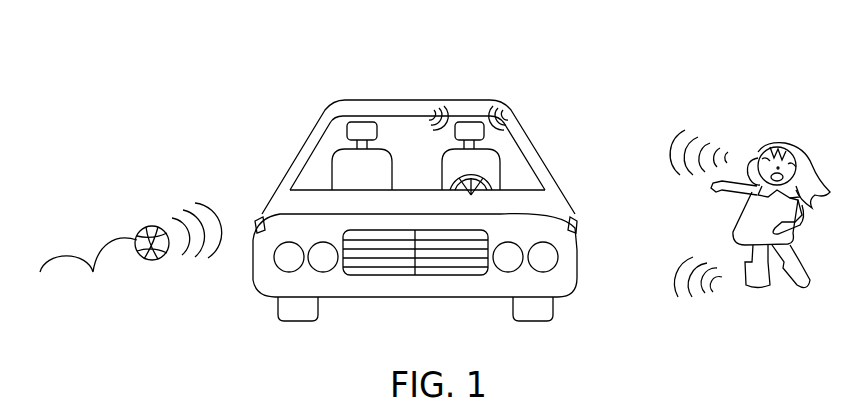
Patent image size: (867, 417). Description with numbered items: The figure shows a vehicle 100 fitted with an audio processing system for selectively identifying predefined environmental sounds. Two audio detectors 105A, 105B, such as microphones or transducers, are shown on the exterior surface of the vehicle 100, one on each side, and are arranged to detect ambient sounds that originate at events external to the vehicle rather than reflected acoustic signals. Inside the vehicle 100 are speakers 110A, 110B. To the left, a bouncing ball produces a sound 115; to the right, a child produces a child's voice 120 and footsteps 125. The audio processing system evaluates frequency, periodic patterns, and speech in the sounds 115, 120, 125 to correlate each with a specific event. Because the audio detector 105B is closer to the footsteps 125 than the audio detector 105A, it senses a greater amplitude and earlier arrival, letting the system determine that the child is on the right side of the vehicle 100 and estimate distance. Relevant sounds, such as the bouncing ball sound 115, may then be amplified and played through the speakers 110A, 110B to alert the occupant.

The vehicle 100 is at (324, 108).
The audio detector 105A is at (255, 221).
The audio detector 105B is at (577, 221).
The speaker 110A is at (432, 113).
The speaker 110B is at (507, 118).
The sound of a bouncing ball 115 is at (165, 197).
The child's voice 120 is at (707, 130).
The footsteps 125 is at (700, 302).